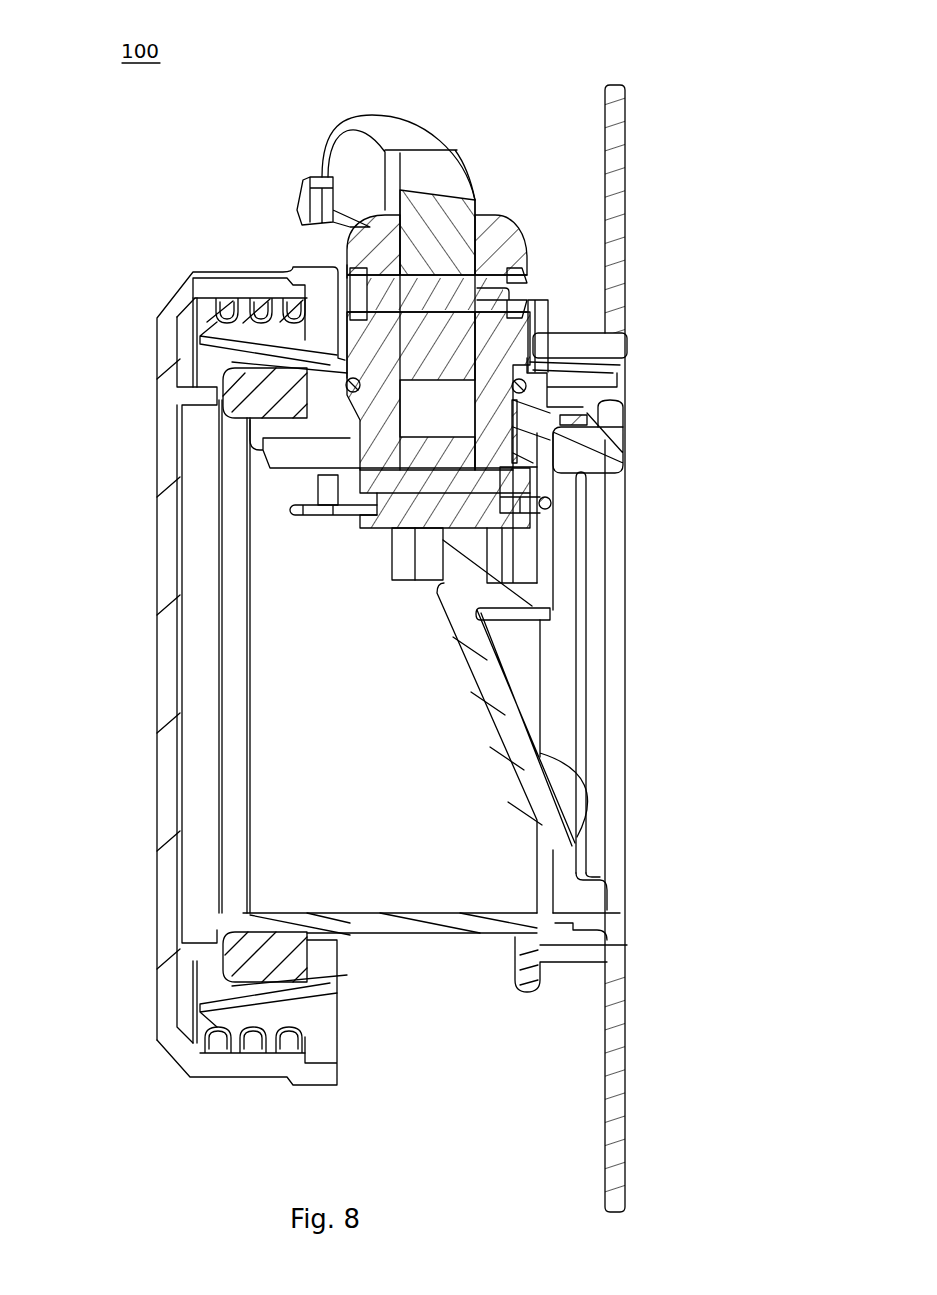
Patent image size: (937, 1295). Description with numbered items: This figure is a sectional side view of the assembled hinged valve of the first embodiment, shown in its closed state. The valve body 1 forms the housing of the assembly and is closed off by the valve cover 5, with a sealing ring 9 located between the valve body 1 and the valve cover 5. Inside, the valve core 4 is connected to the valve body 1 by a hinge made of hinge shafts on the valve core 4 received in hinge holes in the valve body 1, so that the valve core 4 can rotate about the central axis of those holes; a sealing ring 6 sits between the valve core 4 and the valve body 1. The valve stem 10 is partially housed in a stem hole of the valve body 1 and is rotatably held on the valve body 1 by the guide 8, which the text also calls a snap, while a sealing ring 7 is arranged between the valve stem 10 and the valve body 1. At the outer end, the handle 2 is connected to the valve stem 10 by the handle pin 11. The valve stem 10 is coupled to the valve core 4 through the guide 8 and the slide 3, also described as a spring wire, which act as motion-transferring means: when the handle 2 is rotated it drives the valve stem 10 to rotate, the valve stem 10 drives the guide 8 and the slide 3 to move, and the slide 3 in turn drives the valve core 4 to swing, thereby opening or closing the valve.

The valve body 1 is at (613, 1072).
The handle 2 is at (400, 130).
The slide 3 is at (340, 513).
The valve core 4 is at (550, 620).
The valve cover 5 is at (165, 782).
The sealing ring 6 is at (550, 507).
The sealing ring 7 is at (343, 375).
The guide 8 is at (317, 478).
The sealing ring 9 is at (300, 973).
The valve stem 10 is at (480, 213).
The handle pin 11 is at (512, 262).